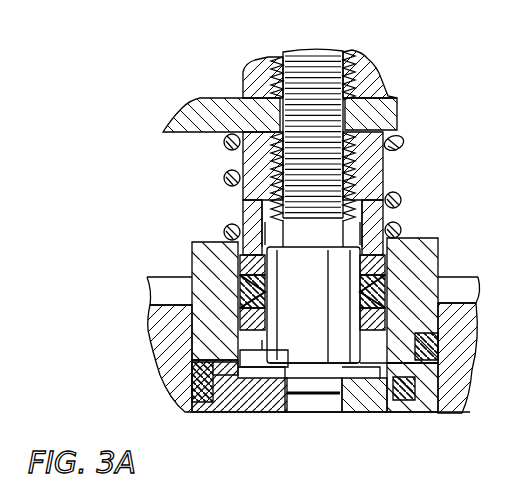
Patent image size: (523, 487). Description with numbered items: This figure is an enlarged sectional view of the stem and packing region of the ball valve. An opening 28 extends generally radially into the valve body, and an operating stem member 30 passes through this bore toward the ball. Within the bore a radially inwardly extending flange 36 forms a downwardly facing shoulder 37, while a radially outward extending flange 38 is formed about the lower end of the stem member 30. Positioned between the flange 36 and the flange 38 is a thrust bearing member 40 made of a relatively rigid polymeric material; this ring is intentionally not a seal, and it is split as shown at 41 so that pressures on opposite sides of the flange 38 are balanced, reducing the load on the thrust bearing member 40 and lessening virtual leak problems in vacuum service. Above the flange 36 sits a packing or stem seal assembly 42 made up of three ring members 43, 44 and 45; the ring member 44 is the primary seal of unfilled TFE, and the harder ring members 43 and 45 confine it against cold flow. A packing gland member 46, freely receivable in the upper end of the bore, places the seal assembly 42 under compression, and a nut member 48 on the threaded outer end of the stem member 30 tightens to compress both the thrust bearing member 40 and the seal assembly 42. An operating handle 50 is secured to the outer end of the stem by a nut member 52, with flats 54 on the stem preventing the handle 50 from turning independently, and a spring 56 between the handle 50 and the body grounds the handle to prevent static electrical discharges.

The opening 28 is at (433, 325).
The operating stem member 30 is at (363, 236).
The radially inwardly extending flange 36 is at (373, 340).
The downwardly facing shoulder 37 is at (358, 414).
The radially outward extending flange 38 is at (232, 412).
The thrust bearing member 40 is at (268, 348).
The split 41 is at (303, 358).
The packing or stem seal assembly 42 is at (178, 237).
The ring member 43 is at (268, 266).
The ring member 44 is at (260, 294).
The ring member 45 is at (273, 318).
The packing gland member 46 is at (242, 212).
The nut member 48 is at (256, 163).
The operating handle 50 is at (233, 97).
The nut member 52 is at (264, 62).
The flats 54 is at (350, 51).
The spring 56 is at (401, 146).